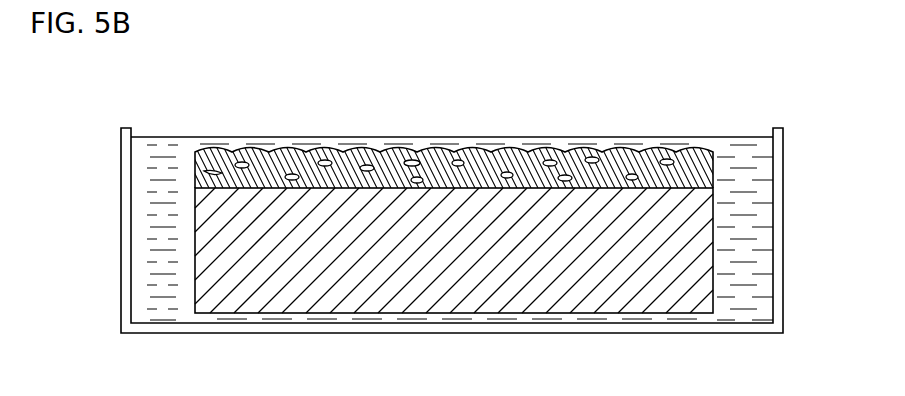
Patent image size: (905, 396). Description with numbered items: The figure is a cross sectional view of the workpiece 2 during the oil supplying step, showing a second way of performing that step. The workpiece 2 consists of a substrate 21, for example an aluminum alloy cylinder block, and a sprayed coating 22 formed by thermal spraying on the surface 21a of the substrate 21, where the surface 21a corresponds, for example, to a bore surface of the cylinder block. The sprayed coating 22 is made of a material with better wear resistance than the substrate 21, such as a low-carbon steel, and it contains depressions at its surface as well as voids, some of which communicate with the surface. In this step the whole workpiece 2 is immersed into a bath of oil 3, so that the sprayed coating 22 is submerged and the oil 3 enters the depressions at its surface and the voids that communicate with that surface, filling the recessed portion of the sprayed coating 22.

The oil 3 is at (732, 142).
The workpiece 2 is at (461, 229).
The substrate 21 is at (713, 272).
The sprayed coating 22 is at (713, 181).
The surface 21a is at (212, 172).